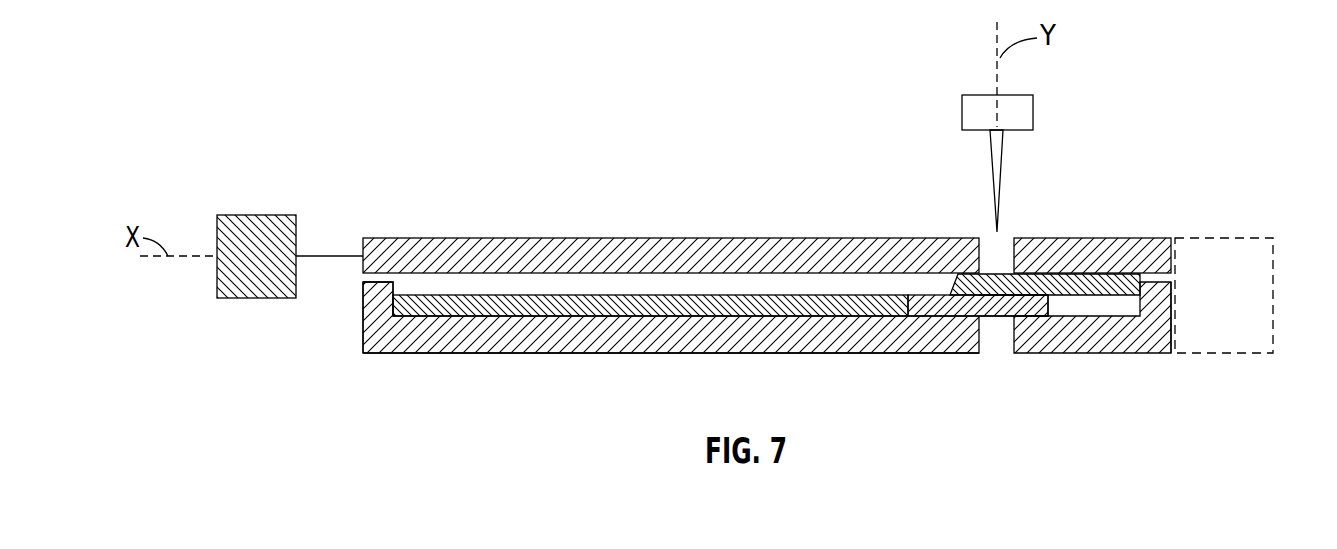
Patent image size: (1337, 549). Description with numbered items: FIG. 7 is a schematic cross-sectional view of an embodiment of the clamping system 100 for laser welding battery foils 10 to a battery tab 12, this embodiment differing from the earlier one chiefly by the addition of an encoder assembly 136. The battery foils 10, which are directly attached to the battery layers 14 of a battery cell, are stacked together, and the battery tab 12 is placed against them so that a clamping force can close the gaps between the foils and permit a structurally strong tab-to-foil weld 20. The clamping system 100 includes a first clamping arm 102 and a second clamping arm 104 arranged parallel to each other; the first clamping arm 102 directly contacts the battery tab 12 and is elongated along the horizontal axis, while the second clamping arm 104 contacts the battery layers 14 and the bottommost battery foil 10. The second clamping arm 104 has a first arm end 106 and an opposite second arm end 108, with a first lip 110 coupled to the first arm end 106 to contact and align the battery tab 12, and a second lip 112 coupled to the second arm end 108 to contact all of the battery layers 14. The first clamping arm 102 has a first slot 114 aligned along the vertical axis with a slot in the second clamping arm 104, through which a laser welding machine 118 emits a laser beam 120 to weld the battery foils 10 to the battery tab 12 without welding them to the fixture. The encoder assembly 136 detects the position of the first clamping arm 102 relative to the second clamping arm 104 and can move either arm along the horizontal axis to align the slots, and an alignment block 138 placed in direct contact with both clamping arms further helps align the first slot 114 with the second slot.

The battery foils 10 is at (935, 305).
The battery tab 12 is at (1120, 274).
The battery layers 14 is at (742, 305).
The tab-to-foil weld 20 is at (1005, 297).
The clamping system 100 is at (870, 202).
The first clamping arm 102 is at (447, 237).
The second clamping arm 104 is at (600, 330).
The first arm end 106 is at (1135, 335).
The second arm end 108 is at (405, 330).
The first lip 110 is at (1172, 335).
The second lip 112 is at (363, 320).
The first slot 114 is at (1010, 240).
The laser welding machine 118 is at (1018, 95).
The laser beam 120 is at (1003, 165).
The encoder assembly 136 is at (262, 215).
The alignment block 138 is at (1243, 238).